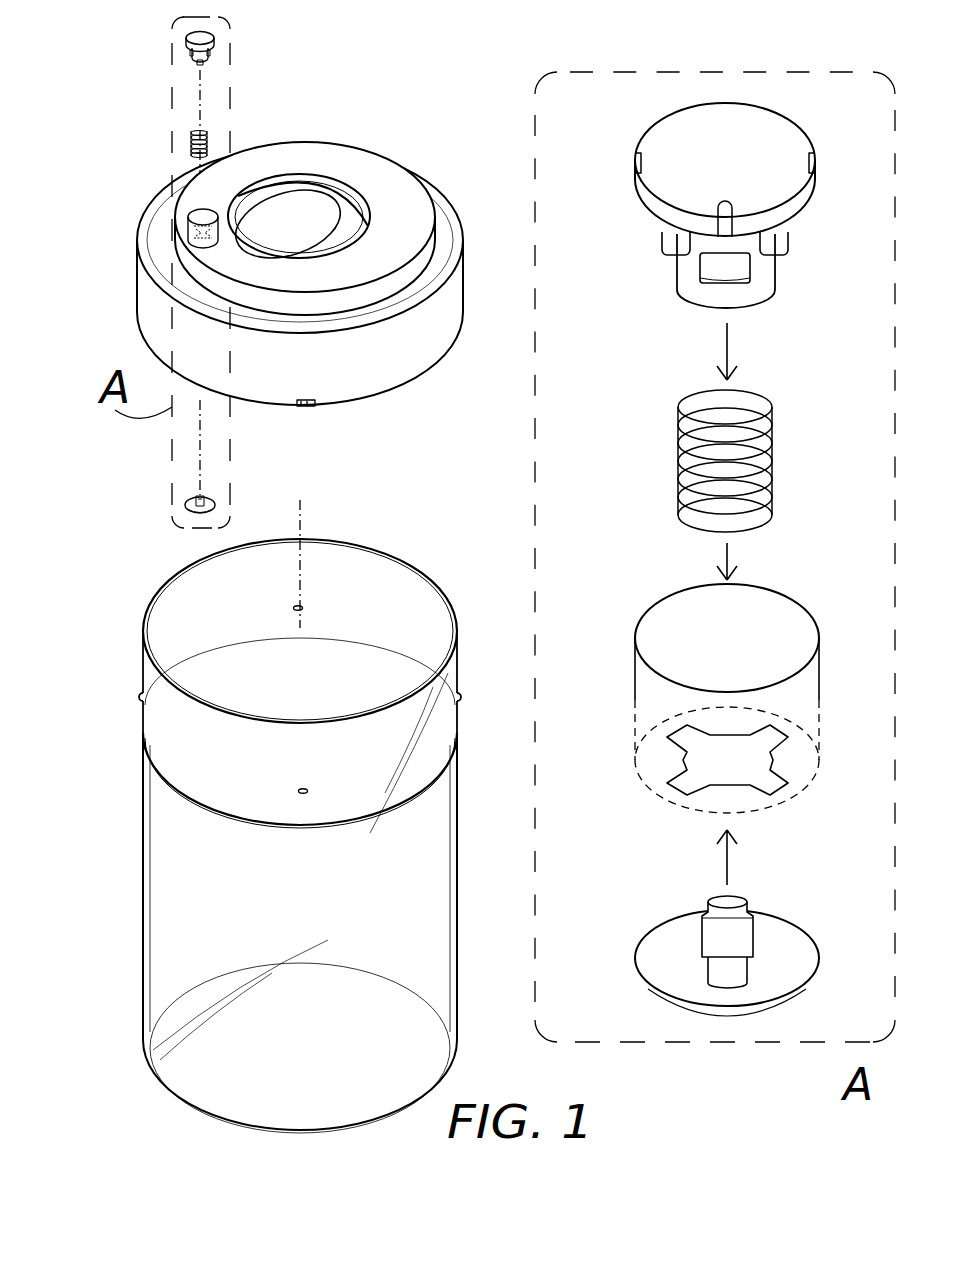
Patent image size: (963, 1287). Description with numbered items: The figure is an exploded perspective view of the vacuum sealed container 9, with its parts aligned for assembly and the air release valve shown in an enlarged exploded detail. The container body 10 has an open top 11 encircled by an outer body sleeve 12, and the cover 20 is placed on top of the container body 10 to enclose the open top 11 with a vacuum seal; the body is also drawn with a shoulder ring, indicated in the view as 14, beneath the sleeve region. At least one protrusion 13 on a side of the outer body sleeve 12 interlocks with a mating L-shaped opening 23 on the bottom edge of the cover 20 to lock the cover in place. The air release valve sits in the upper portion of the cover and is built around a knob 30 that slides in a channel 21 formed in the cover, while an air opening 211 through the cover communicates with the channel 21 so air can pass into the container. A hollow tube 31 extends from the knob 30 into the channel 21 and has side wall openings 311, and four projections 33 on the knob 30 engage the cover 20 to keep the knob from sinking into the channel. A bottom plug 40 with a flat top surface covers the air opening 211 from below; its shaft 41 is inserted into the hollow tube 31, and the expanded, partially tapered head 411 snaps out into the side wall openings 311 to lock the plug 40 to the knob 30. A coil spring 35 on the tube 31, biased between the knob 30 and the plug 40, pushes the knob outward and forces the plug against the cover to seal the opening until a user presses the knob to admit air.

The vacuum sealed container 9 is at (400, 153).
The container body 10 is at (295, 816).
The open top 11 is at (170, 578).
The outer body sleeve 12 is at (141, 672).
The protrusion 13 is at (302, 607).
The shoulder ring 14 is at (143, 745).
The cover 20 is at (321, 261).
The channel 21 is at (189, 214).
The air opening 211 is at (190, 236).
The L-shaped opening 23 is at (318, 398).
The knob 30 is at (480, 189).
The hollow tube 31 is at (720, 293).
The side wall openings 311 is at (727, 268).
The projections 33 is at (783, 245).
The coil spring 35 is at (192, 140).
The bottom plug 40 is at (491, 749).
The shaft 41 is at (708, 973).
The head 411 is at (752, 932).